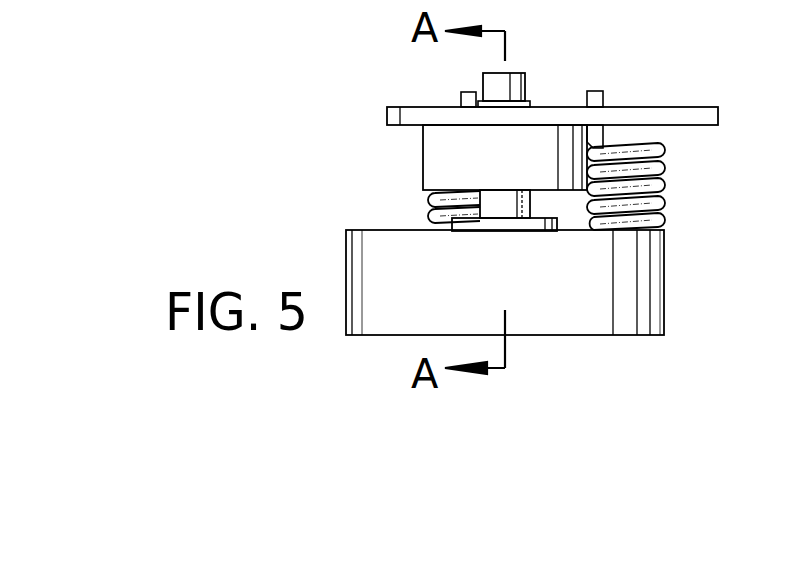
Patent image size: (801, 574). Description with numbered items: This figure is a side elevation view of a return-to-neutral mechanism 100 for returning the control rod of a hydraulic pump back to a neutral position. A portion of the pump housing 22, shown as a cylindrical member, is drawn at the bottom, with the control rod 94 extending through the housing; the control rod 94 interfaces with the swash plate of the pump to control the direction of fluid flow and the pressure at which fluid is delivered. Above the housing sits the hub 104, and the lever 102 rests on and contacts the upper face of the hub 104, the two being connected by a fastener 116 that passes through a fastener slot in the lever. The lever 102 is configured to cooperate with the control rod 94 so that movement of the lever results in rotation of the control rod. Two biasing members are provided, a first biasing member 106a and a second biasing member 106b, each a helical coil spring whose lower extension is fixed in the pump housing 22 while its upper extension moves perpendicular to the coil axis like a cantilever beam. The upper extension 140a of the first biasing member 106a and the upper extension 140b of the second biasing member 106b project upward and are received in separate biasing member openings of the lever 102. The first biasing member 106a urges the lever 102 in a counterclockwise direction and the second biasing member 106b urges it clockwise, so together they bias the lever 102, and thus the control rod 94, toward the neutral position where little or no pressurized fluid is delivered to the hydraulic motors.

The return-to-neutral mechanism 100 is at (343, 103).
The lever 102 is at (692, 113).
The hub 104 is at (428, 160).
The first biasing member 106a is at (666, 185).
The second biasing member 106b is at (428, 207).
The fastener 116 is at (515, 73).
The upper extension of first spring 140a is at (596, 100).
The upper extension of second spring 140b is at (463, 92).
The control rod 94 is at (497, 207).
The pump housing 22 is at (665, 267).